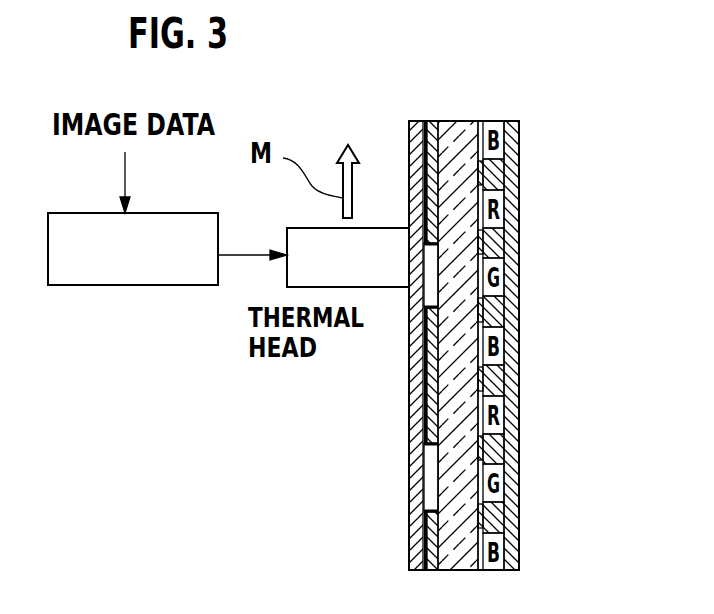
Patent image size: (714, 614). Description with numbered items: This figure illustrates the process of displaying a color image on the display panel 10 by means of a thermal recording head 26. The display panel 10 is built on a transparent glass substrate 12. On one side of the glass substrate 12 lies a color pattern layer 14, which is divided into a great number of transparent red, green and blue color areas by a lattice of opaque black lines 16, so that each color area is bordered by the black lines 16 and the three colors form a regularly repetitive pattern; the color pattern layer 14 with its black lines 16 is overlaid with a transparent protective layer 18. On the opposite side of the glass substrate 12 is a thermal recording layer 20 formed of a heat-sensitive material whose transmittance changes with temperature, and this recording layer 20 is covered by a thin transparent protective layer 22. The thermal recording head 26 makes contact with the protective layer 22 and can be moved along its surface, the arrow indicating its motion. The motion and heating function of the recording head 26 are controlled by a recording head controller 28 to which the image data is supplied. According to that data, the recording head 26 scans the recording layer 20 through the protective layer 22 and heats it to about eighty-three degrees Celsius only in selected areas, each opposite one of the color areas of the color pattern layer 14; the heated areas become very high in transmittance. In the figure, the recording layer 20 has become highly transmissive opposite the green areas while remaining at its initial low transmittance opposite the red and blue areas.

The display panel 10 is at (538, 155).
The transparent glass substrate 12 is at (459, 121).
The color pattern layer 14 is at (493, 256).
The black lines 16 is at (488, 313).
The transparent protective layer 18 is at (512, 384).
The thermal recording layer 20 is at (426, 121).
The protective layer 22 is at (413, 521).
The thermal recording head 26 is at (296, 278).
The recording head controller 28 is at (75, 287).